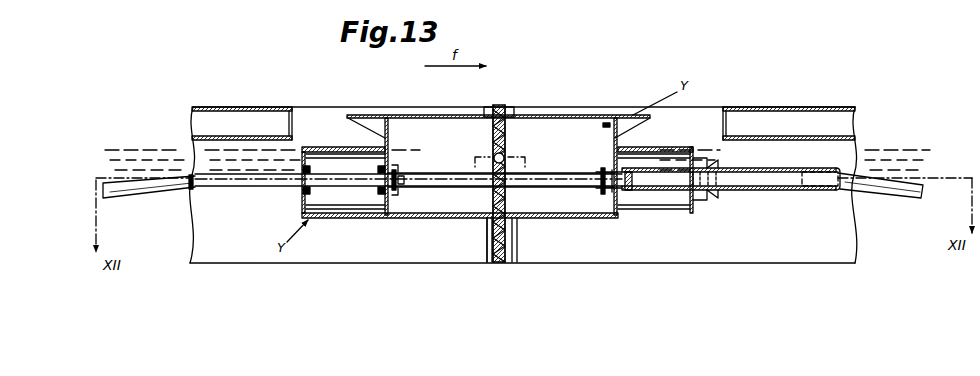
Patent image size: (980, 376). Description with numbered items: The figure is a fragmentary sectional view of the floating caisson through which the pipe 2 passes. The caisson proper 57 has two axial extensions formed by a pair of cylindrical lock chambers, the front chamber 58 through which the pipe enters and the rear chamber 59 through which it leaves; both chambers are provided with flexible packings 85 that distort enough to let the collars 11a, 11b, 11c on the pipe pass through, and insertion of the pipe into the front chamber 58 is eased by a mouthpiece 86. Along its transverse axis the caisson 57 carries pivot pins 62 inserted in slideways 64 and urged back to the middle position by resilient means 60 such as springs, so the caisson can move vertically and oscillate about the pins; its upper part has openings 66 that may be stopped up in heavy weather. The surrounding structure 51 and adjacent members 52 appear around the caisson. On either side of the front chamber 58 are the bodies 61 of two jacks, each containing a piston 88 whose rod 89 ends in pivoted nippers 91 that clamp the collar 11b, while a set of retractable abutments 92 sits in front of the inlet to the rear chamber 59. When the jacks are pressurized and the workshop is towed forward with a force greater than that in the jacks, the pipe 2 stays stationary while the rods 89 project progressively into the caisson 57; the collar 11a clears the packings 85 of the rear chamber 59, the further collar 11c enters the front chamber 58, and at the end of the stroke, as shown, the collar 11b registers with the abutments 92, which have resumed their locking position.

The pipe 2 is at (118, 196).
The collar 11a is at (192, 192).
The collar 11b is at (400, 177).
The collar 11c is at (602, 170).
The cylinder body 51 is at (707, 118).
The tube 52 is at (223, 125).
The caisson proper 57 is at (455, 198).
The front lock chamber 58 is at (683, 213).
The rear lock chamber 59 is at (333, 148).
The resilient means 60 is at (509, 237).
The jack body 61 is at (794, 189).
The pivot pin 62 is at (504, 157).
The slideway 64 is at (488, 252).
The opening 66 is at (540, 115).
The flexible packing 85 is at (302, 190).
The mouthpiece 86 is at (712, 195).
The piston 88 is at (630, 192).
The rod 89 is at (567, 180).
The pivoted nippers 91 is at (397, 165).
The retractable abutments 92 is at (398, 196).